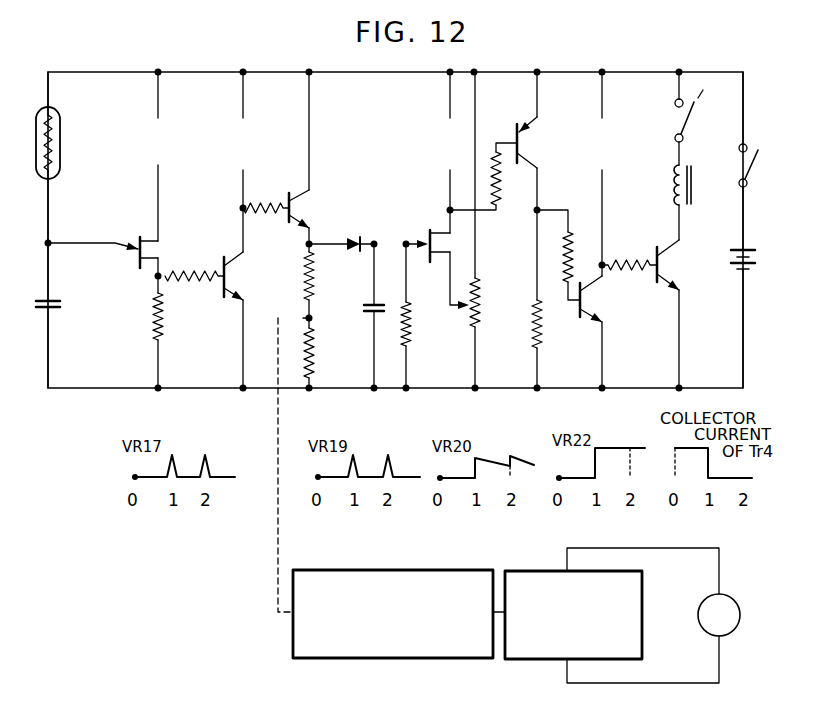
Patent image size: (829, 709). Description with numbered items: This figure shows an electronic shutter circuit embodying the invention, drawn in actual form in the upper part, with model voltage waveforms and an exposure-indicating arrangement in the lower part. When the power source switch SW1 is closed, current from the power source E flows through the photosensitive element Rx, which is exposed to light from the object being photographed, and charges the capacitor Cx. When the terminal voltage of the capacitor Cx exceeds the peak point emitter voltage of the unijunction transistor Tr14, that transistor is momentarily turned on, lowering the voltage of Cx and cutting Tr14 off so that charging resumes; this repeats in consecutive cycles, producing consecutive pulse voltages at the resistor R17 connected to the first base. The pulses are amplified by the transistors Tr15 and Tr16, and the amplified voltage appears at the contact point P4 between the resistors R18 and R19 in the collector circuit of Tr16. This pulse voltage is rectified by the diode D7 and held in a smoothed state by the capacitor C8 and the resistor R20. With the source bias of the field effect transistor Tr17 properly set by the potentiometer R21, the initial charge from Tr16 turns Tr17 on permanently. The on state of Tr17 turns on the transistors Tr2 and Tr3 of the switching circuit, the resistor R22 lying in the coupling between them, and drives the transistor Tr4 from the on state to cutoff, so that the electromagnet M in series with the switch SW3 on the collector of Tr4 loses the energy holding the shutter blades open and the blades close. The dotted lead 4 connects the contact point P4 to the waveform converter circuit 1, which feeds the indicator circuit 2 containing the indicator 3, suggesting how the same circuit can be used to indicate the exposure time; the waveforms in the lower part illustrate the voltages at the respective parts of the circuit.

The photosensitive element Rx is at (60, 137).
The capacitor Cx is at (34, 300).
The unijunction transistor Tr14 is at (144, 257).
The transistor Tr15 is at (254, 276).
The transistor Tr16 is at (292, 214).
The field effect transistor Tr17 is at (428, 236).
The resistor R17 is at (160, 336).
The resistor R18 is at (313, 280).
The resistor R19 is at (313, 345).
The contact point P4 is at (312, 320).
The diode D7 is at (348, 251).
The capacitor C8 is at (380, 308).
The resistor R20 is at (411, 310).
The potentiometer R21 is at (480, 318).
The resistor R22 is at (542, 330).
The transistor Tr2 is at (520, 150).
The transistor Tr3 is at (584, 312).
The transistor Tr4 is at (660, 276).
The switch SW3 is at (697, 106).
The electromagnet M is at (692, 194).
The power source switch SW1 is at (752, 170).
The power source E is at (747, 248).
The waveform converter circuit 1 is at (452, 569).
The indicator circuit 2 is at (538, 660).
The indicator 3 is at (733, 602).
The lead 4 is at (277, 546).